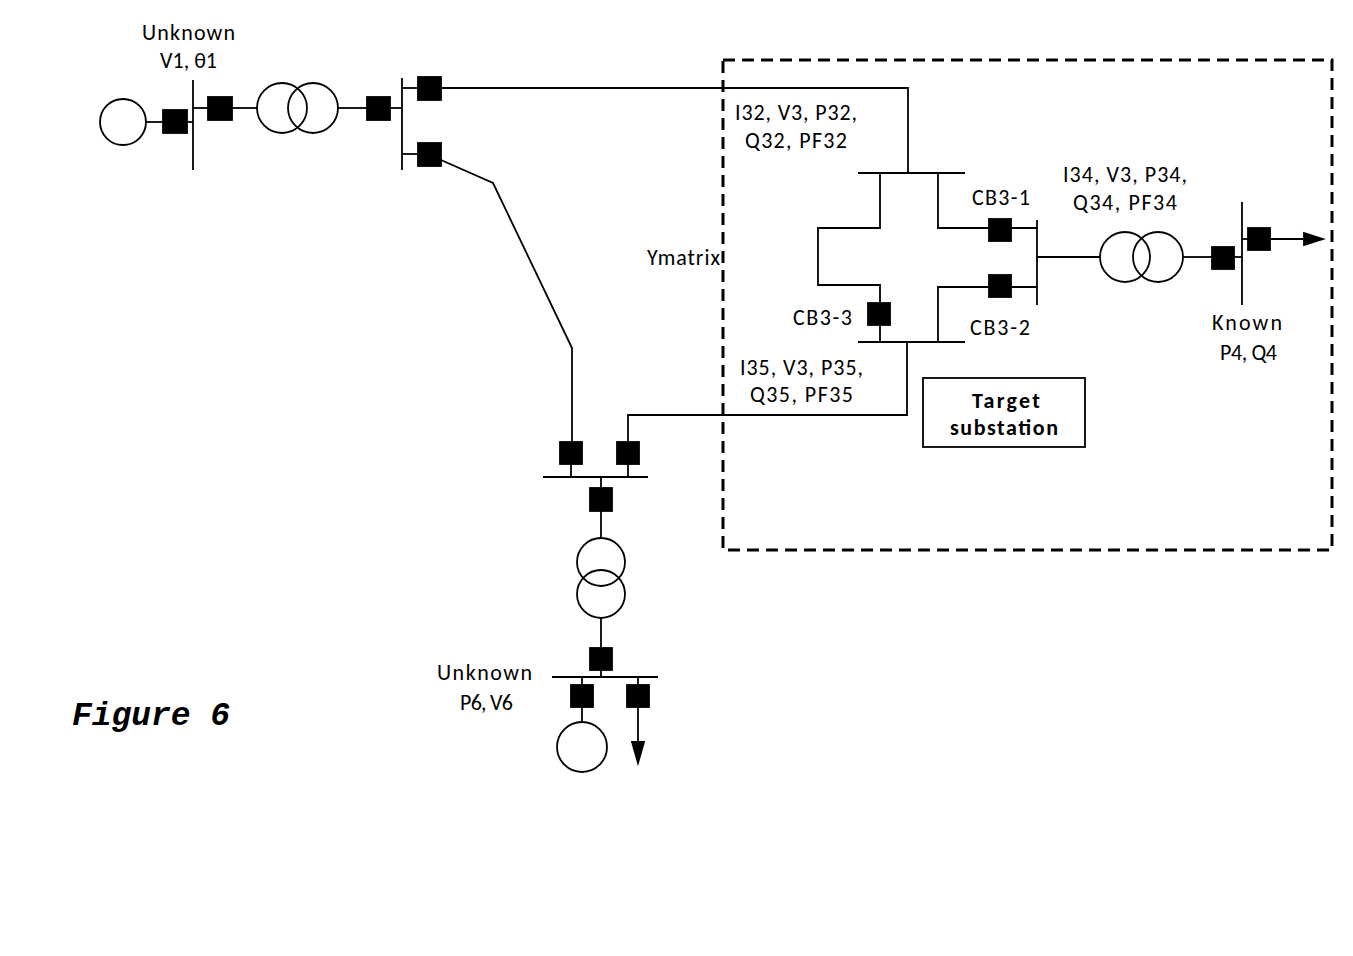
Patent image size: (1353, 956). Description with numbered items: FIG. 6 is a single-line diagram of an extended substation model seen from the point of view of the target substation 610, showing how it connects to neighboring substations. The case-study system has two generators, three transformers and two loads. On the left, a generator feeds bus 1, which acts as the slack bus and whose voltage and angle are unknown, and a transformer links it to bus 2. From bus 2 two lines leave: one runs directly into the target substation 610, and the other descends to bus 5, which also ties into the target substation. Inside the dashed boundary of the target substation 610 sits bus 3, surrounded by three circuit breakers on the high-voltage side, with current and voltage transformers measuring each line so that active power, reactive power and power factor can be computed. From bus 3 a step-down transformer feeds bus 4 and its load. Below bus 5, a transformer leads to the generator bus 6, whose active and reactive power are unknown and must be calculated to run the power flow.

The target substation 610 is at (1122, 538).
The bus 1 is at (192, 142).
The bus 2 is at (401, 146).
The bus 3 is at (927, 257).
The bus 4 is at (1249, 237).
The bus 5 is at (625, 484).
The bus 6 is at (639, 689).